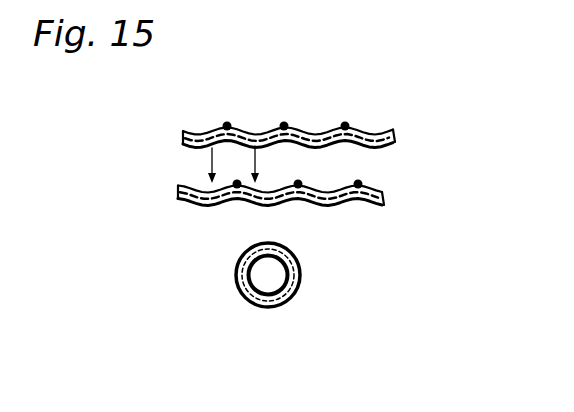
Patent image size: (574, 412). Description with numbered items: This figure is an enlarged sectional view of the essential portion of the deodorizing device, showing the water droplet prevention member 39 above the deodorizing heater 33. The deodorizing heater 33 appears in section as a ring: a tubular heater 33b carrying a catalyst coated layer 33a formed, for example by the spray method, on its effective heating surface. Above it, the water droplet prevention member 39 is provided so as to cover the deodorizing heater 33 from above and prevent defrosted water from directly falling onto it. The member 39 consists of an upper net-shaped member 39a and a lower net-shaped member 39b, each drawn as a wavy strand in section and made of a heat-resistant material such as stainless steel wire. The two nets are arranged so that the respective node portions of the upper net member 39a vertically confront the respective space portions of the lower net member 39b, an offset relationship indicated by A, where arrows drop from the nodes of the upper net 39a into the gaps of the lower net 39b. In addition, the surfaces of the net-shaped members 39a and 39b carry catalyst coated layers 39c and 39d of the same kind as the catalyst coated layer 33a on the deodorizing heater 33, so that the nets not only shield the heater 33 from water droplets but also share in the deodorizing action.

The water droplet prevention member 39 is at (372, 113).
The upper net-shaped member 39a is at (373, 133).
The lower net-shaped member 39b is at (360, 184).
The catalyst coated layer 39c is at (380, 142).
The catalyst coated layer 39d is at (380, 207).
The arrangement of node portions confronting space portions A is at (200, 157).
The deodorizing heater 33 is at (304, 300).
The catalyst coated layer 33a is at (272, 308).
The tubular heater 33b is at (300, 279).